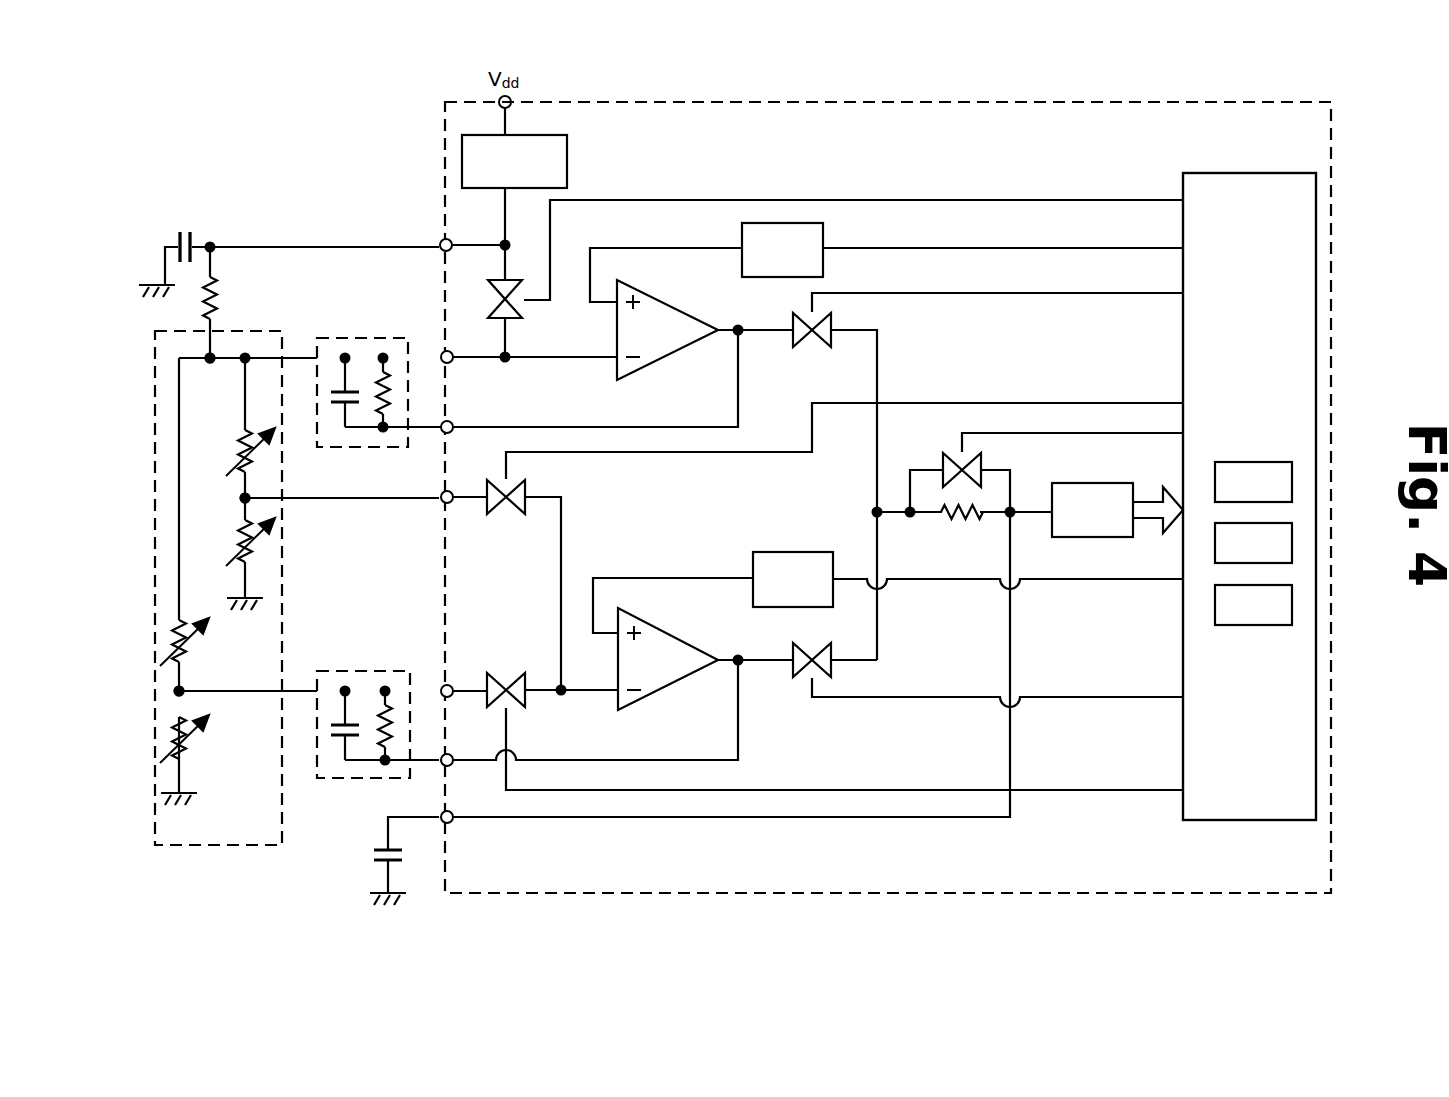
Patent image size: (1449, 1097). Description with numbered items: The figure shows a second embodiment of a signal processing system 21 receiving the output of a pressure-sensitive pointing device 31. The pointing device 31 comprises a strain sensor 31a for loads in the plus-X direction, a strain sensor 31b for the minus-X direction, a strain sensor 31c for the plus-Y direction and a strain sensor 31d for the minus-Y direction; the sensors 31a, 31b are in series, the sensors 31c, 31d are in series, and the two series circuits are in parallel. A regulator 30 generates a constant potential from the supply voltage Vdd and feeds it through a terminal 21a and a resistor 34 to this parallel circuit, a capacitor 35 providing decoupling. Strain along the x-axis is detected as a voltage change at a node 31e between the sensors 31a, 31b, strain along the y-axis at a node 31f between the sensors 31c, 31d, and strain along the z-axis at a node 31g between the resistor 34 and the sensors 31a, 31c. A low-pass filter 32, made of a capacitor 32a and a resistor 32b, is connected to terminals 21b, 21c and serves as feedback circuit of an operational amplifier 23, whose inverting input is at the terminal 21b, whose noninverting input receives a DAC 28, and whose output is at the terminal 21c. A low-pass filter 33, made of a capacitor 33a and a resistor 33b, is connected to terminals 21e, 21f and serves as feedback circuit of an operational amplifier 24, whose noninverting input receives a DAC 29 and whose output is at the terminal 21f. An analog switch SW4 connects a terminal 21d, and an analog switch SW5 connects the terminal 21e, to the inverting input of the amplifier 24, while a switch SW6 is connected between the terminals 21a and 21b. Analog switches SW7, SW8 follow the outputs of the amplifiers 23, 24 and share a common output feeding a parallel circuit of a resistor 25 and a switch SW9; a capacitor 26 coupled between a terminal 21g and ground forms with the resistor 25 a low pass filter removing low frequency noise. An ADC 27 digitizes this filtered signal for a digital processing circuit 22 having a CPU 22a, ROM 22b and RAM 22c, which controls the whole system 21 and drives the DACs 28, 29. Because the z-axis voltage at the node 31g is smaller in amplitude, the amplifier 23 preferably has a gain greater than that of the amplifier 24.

The signal processing system 21 is at (1002, 102).
The terminal 21a is at (440, 238).
The terminal 21b is at (441, 350).
The terminal 21c is at (443, 433).
The terminal 21d is at (443, 503).
The terminal 21e is at (443, 685).
The terminal 21f is at (443, 766).
The terminal 21g is at (444, 823).
The digital processing circuit 22 is at (1279, 521).
The CPU 22a is at (1292, 480).
The ROM 22b is at (1292, 543).
The RAM 22c is at (1292, 603).
The operational amplifier 23 is at (675, 303).
The operational amplifier 24 is at (676, 633).
The resistor 25 is at (966, 522).
The capacitor 26 is at (380, 866).
The ADC 27 is at (1090, 483).
The DAC 28 is at (824, 234).
The DAC 29 is at (790, 552).
The regulator 30 is at (568, 160).
The pressure-sensitive pointing device 31 is at (237, 331).
The strain sensor 31a is at (240, 452).
The strain sensor 31b is at (262, 553).
The strain sensor 31c is at (175, 642).
The strain sensor 31d is at (175, 738).
The node 31e is at (240, 500).
The node 31f is at (175, 693).
The node 31g is at (205, 362).
The low-pass filter 32 is at (335, 338).
The capacitor 32a is at (342, 412).
The resistor 32b is at (386, 412).
The low-pass filter 33 is at (348, 671).
The capacitor 33a is at (344, 748).
The resistor 33b is at (380, 745).
The resistor 34 is at (216, 292).
The capacitor 35 is at (193, 240).
The analog switch SW4 is at (512, 513).
The analog switch SW5 is at (510, 672).
The switch SW6 is at (521, 310).
The analog switch SW7 is at (809, 347).
The analog switch SW8 is at (806, 678).
The switch SW9 is at (955, 457).